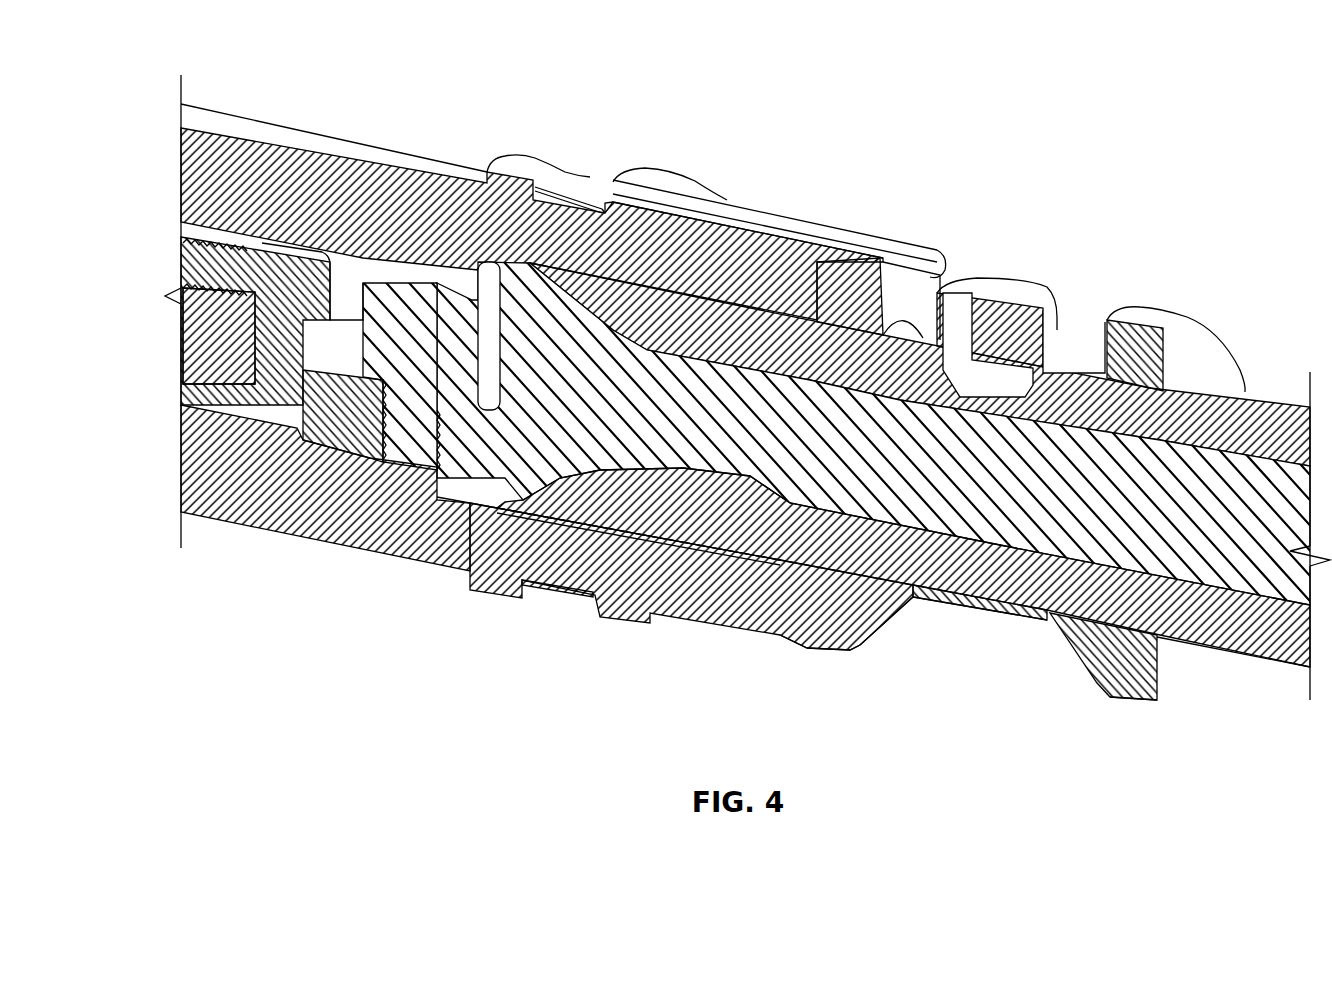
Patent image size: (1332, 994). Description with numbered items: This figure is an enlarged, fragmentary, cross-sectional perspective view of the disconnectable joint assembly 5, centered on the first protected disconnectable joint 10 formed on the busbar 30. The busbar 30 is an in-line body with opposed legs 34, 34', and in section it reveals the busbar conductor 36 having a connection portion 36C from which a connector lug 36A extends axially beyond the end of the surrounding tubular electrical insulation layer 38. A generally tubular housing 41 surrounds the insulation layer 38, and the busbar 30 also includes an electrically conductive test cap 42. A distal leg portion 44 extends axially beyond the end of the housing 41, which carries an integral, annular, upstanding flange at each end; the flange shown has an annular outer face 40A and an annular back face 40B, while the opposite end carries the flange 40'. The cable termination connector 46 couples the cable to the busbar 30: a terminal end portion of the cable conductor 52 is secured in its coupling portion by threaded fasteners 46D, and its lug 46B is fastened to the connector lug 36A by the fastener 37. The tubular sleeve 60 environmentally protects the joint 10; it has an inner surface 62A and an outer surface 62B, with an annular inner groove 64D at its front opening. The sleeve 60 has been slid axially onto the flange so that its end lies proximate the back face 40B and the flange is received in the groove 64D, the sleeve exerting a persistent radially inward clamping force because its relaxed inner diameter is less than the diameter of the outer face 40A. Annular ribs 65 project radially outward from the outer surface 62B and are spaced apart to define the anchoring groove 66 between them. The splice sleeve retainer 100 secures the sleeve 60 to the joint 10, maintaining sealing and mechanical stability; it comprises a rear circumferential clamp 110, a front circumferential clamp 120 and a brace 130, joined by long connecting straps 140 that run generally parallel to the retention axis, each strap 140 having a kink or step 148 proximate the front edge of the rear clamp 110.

The disconnectable joint assembly 5 is at (1165, 78).
The first protected disconnectable joint 10 is at (925, 115).
The busbar 30 is at (977, 693).
The leg 34 is at (903, 579).
The leg 34' is at (1243, 559).
The busbar conductor 36 is at (1067, 567).
The connector lug 36A is at (337, 440).
The connection portion 36C is at (993, 600).
The fastener 37 is at (403, 440).
The electrical insulation layer 38 is at (1243, 430).
The annular outer face 40A is at (823, 263).
The annular back face 40B is at (884, 305).
The flange 40' is at (1176, 321).
The housing 41 is at (933, 600).
The test cap 42 is at (1000, 290).
The distal leg portion 44 is at (538, 522).
The cable termination connector 46 is at (262, 425).
The lug 46B is at (343, 300).
The threaded fasteners 46D is at (200, 247).
The conductor 52 is at (203, 330).
The sleeve 60 is at (338, 555).
The inner surface 62A is at (366, 272).
The outer surface 62B is at (415, 150).
The annular inner groove 64D is at (827, 647).
The ribs 65 is at (527, 160).
The anchoring groove 66 is at (650, 138).
The splice sleeve retainer 100 is at (755, 205).
The rear circumferential clamp 110 is at (567, 597).
The front circumferential clamp 120 is at (800, 647).
The brace 130 is at (940, 276).
The long connecting straps 140 is at (783, 225).
The step 148 is at (593, 193).